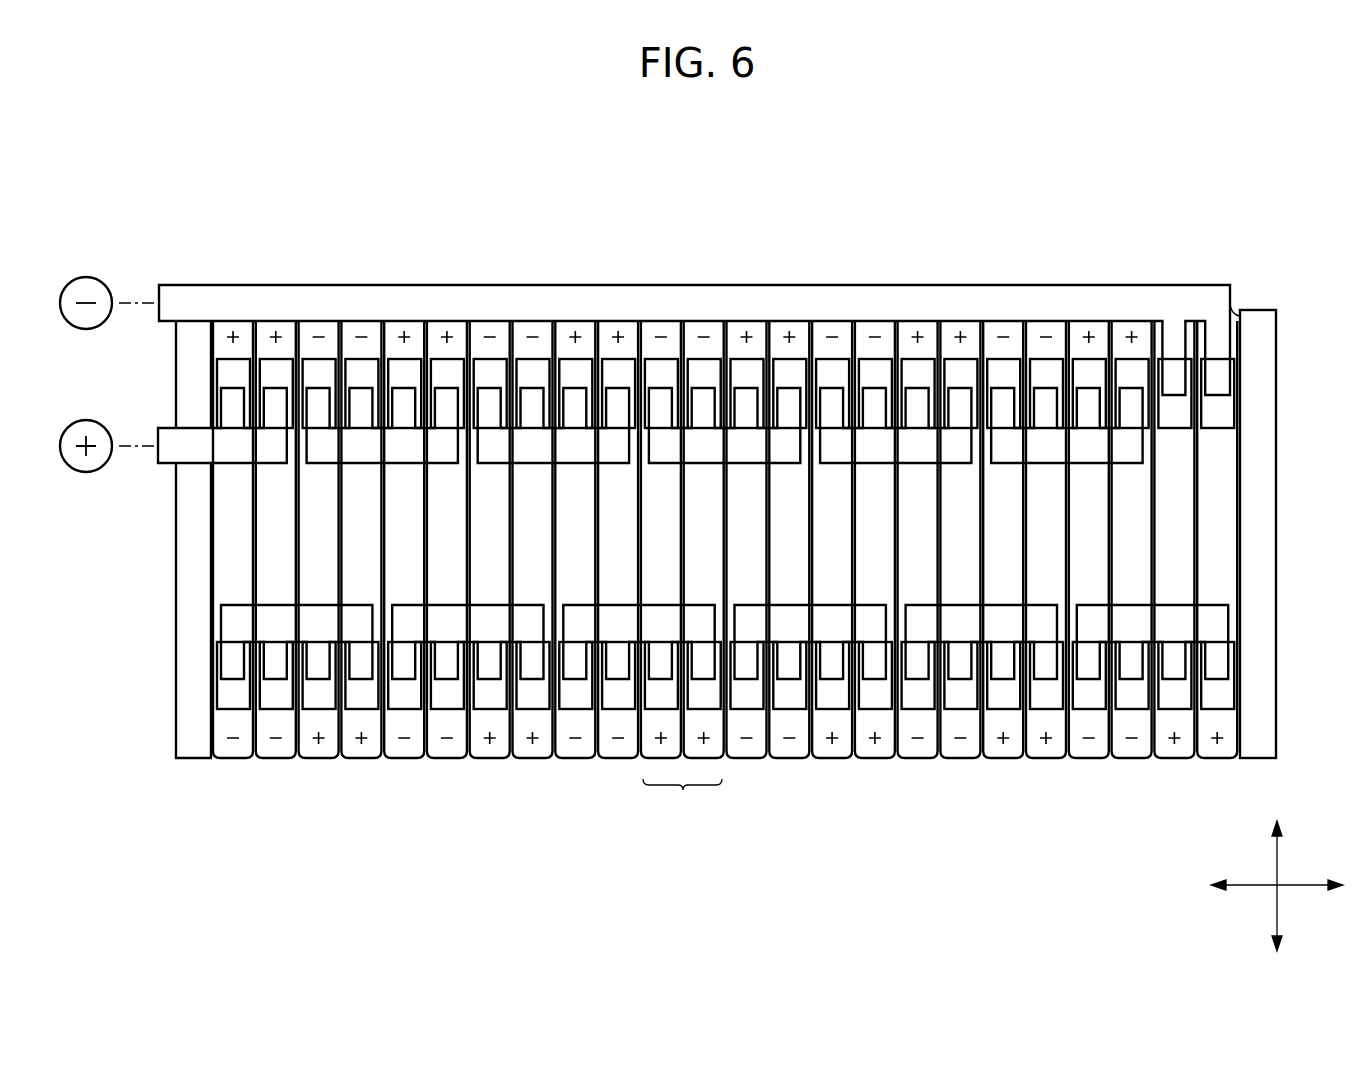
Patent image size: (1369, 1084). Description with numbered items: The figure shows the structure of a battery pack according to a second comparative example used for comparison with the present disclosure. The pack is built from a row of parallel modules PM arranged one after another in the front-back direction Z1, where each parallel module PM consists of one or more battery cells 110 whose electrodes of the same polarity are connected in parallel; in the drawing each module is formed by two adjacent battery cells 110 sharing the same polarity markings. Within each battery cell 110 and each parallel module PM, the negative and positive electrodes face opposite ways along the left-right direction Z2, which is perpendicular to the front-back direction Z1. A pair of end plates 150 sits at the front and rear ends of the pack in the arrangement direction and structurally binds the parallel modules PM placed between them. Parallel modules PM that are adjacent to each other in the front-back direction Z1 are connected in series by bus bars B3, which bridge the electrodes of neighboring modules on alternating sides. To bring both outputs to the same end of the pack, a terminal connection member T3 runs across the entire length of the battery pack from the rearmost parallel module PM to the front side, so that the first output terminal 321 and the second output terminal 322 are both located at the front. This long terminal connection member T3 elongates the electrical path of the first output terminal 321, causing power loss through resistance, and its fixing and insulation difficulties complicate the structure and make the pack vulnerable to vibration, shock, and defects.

The battery cell 110 is at (923, 752).
The end plate 150 is at (180, 607).
The terminal connection member T3 is at (742, 296).
The bus bar B3 is at (897, 447).
The first output terminal 321 is at (85, 277).
The second output terminal 322 is at (86, 472).
The parallel module PM is at (682, 802).
The front-back direction Z1 is at (1261, 885).
The left-right direction Z2 is at (1277, 871).